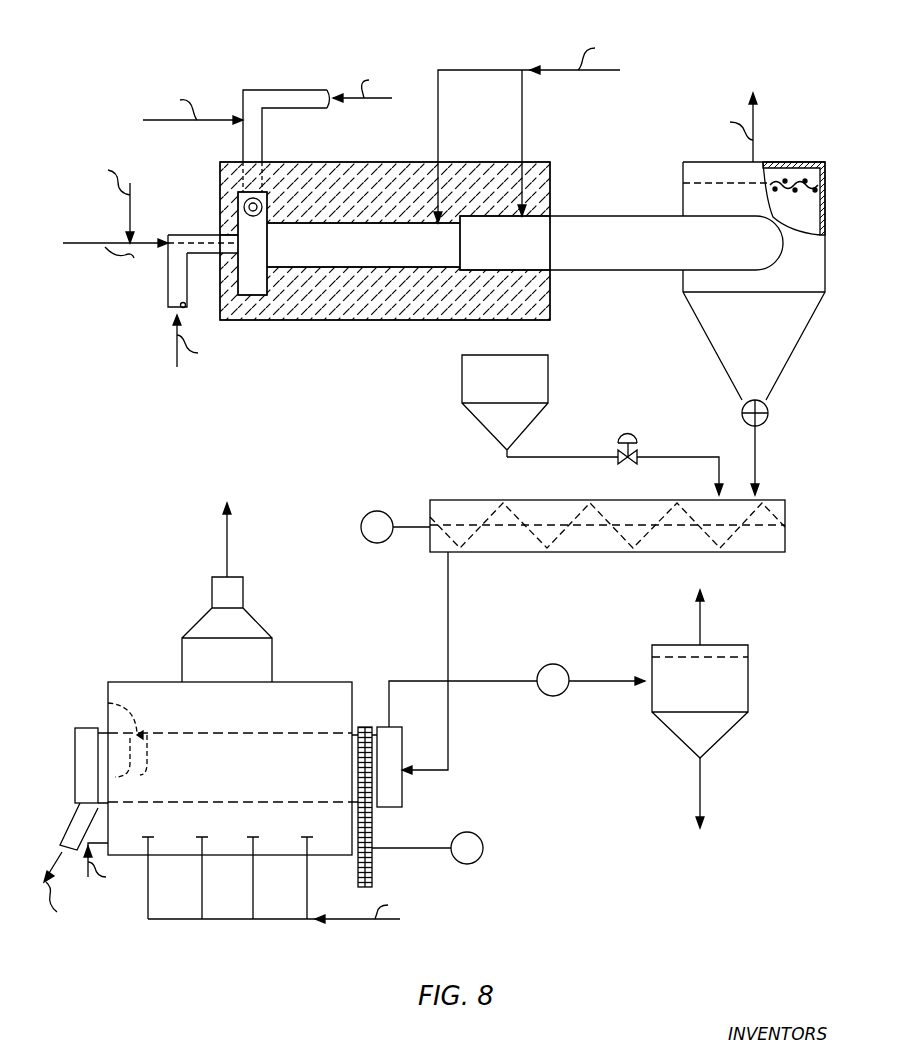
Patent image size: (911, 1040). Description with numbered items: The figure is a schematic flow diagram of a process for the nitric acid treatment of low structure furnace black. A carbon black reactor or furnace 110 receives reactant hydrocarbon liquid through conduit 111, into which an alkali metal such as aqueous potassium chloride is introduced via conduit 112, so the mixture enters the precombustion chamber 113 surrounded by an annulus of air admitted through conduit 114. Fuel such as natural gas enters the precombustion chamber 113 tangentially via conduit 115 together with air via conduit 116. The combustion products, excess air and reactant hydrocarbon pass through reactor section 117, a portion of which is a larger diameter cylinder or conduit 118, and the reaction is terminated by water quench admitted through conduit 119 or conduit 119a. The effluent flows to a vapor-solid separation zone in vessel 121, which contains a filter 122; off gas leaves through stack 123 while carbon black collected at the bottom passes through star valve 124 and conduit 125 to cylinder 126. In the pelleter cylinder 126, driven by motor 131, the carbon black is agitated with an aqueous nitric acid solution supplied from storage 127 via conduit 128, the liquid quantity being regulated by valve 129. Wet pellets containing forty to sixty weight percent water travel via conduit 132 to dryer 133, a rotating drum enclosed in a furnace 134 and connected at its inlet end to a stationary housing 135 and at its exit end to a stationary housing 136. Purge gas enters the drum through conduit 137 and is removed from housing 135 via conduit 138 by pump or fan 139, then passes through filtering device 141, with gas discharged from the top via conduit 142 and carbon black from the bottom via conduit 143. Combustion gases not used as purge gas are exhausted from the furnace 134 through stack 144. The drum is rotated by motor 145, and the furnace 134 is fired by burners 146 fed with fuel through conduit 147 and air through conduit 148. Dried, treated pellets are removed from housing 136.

The carbon black reactor 110 is at (323, 162).
The reactant hydrocarbon conduit 111 is at (87, 243).
The alkali metal conduit 112 is at (130, 212).
The precombustion chamber 113 is at (256, 295).
The air conduit 114 is at (168, 300).
The fuel conduit 115 is at (240, 120).
The air conduit 116 is at (266, 140).
The reactor section 117 is at (353, 253).
The larger diameter conduit 118 is at (568, 253).
The water quench conduit 119 is at (438, 140).
The water quench conduit 119a is at (522, 140).
The separation vessel 121 is at (683, 196).
The filter 122 is at (800, 184).
The stack 123 is at (757, 138).
The star valve 124 is at (767, 412).
The carbon black conduit 125 is at (755, 456).
The pelleter cylinder 126 is at (483, 500).
The nitric acid storage 127 is at (548, 374).
The liquid conduit 128 is at (668, 457).
The valve 129 is at (620, 436).
The motor 131 is at (368, 514).
The wet pellet conduit 132 is at (448, 754).
The dryer 133 is at (246, 787).
The furnace 134 is at (303, 682).
The stationary housing 135 is at (402, 800).
The stationary housing 136 is at (75, 750).
The purge gas conduit 137 is at (112, 706).
The purge gas conduit 138 is at (470, 681).
The pump or fan 139 is at (542, 668).
The filtering device 141 is at (748, 668).
The gas discharge conduit 142 is at (700, 624).
The carbon black discharge conduit 143 is at (700, 790).
The exhaust stack 144 is at (243, 592).
The motor 145 is at (480, 836).
The burners 146 is at (250, 843).
The fuel conduit 147 is at (350, 919).
The oxidant conduit 148 is at (88, 876).